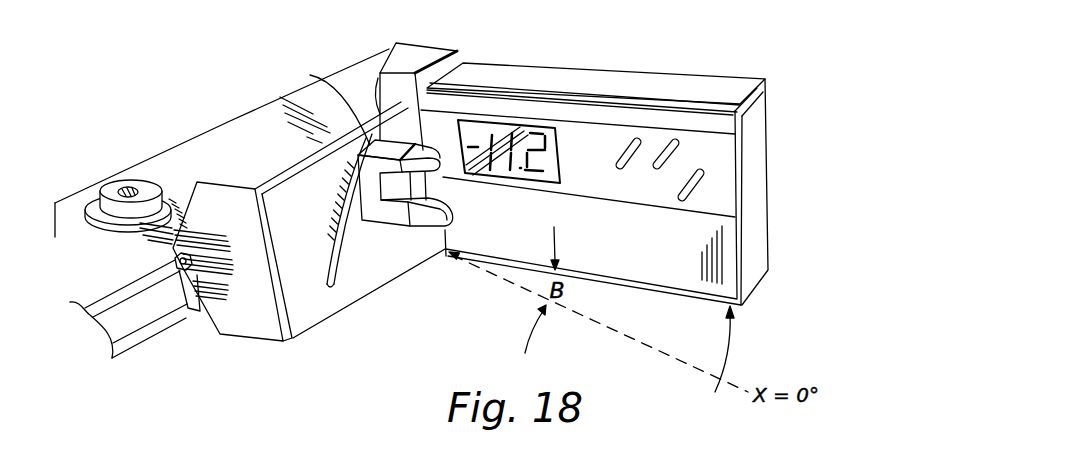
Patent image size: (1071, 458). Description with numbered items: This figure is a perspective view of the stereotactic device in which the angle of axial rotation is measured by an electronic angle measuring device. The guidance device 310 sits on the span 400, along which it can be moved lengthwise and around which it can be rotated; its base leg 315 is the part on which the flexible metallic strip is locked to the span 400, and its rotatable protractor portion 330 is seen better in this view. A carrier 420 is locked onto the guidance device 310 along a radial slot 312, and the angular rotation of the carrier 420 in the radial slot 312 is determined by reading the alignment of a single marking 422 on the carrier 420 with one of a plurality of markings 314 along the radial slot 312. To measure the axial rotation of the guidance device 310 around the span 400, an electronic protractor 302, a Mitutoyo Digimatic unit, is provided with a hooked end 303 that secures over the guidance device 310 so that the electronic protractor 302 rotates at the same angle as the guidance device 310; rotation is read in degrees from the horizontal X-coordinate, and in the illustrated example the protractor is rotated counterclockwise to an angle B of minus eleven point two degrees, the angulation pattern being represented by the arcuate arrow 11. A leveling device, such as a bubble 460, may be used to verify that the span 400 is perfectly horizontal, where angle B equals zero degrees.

The electronic protractor 302 is at (617, 80).
The hooked end 303 is at (380, 72).
The guidance device 310 is at (222, 175).
The radial slot 312 is at (338, 263).
The markings 314 is at (331, 216).
The base leg 315 is at (198, 318).
The rotatable protractor portion 330 is at (267, 334).
The span 400 is at (142, 341).
The carrier 420 is at (403, 226).
The single marking 422 is at (310, 75).
The bubble 460 is at (125, 188).
The arcuate arrow 11 is at (732, 337).